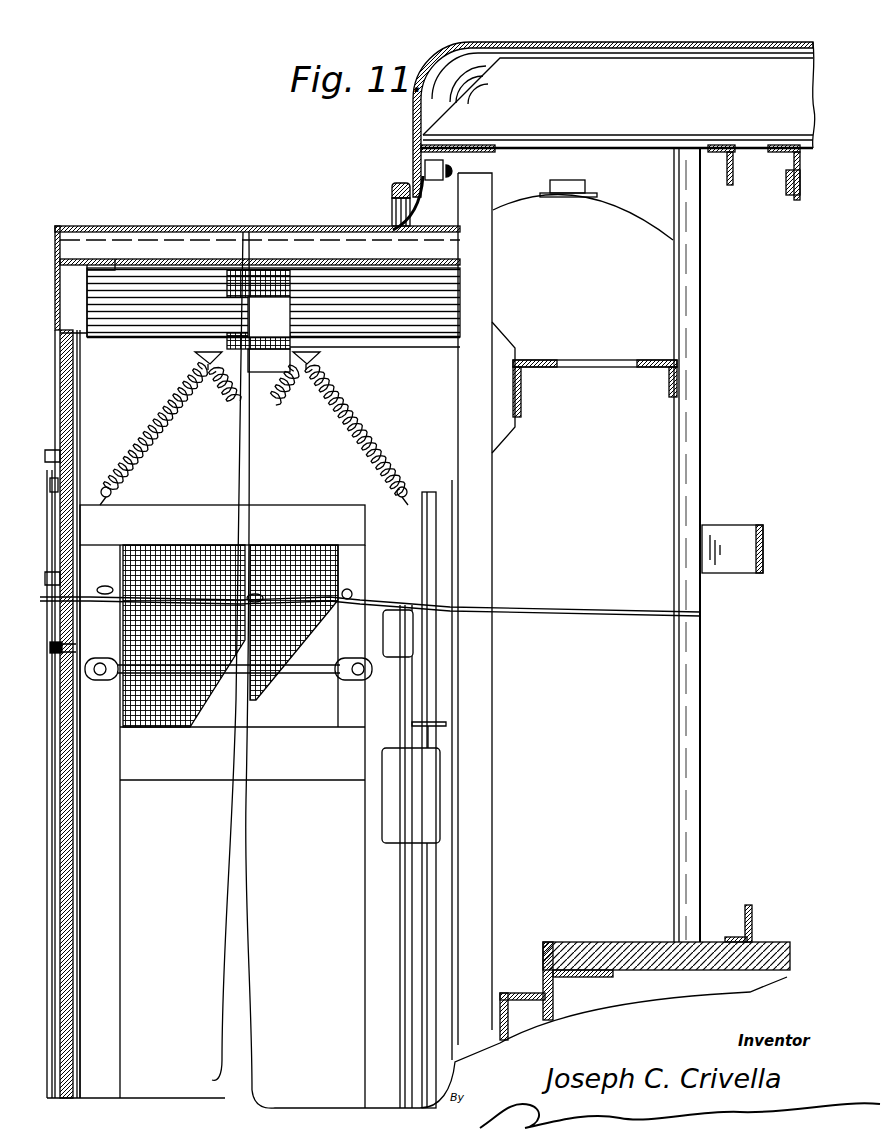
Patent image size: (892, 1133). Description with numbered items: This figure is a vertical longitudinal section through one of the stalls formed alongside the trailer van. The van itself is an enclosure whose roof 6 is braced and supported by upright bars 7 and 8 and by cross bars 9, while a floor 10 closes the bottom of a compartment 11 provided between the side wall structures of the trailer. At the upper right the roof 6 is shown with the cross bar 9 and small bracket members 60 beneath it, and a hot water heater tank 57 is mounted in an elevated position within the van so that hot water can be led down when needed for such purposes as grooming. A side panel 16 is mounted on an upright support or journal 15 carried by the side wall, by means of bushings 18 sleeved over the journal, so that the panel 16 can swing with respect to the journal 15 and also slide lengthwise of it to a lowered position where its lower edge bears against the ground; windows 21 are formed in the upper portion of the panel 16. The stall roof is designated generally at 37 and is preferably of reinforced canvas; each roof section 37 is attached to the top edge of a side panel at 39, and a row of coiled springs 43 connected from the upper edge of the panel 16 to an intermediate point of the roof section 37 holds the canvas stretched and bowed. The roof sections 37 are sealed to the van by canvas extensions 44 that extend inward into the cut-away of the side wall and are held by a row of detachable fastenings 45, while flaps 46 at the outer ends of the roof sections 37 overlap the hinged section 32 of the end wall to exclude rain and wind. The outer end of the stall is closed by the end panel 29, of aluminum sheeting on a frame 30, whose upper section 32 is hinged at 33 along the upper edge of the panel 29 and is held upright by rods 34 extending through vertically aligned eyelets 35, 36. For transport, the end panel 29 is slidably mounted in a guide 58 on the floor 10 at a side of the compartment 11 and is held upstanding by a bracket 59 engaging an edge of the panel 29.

The roof 6 is at (808, 42).
The cross bars 9 is at (813, 122).
The mounting brackets 60 is at (797, 197).
The detachable fastenings 45 is at (455, 164).
The canvas extensions 44 is at (372, 226).
The hot water heater tank 57 is at (650, 218).
The upright bar 7 is at (491, 524).
The upright bar 8 is at (676, 500).
The bracket 59 is at (745, 574).
The roof sections 37 is at (163, 258).
The flaps 46 is at (57, 314).
The end panel 29 is at (58, 824).
The frame 30 is at (76, 704).
The hinged section 32 is at (61, 520).
The rods 34 is at (62, 546).
The eyelets 35 is at (57, 487).
The hinge 33 is at (52, 648).
The roof attachment 39 is at (206, 506).
The windows 21 is at (302, 724).
The eyelets 36 is at (57, 458).
The coiled springs 43 is at (152, 440).
The panel 16 is at (260, 1072).
The upright support or journal 15 is at (426, 738).
The bushings 18 is at (414, 633).
The compartment 11 is at (733, 890).
The floor 10 is at (788, 944).
The guide 58 is at (752, 910).